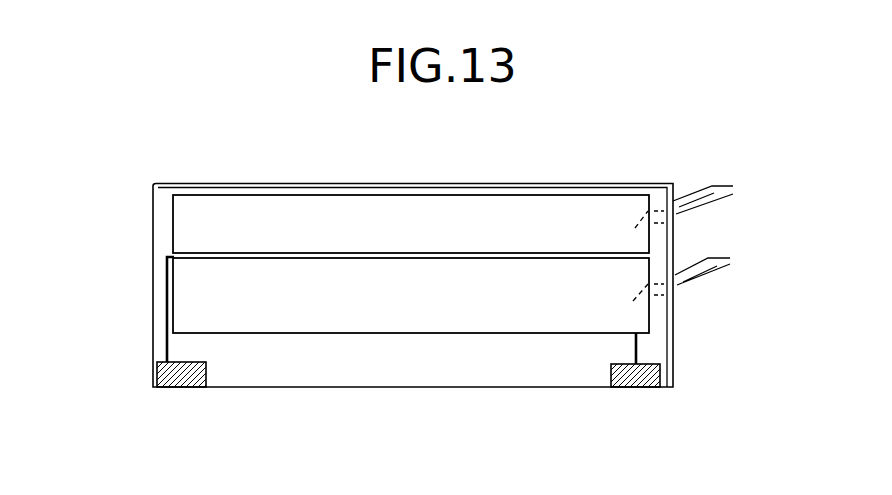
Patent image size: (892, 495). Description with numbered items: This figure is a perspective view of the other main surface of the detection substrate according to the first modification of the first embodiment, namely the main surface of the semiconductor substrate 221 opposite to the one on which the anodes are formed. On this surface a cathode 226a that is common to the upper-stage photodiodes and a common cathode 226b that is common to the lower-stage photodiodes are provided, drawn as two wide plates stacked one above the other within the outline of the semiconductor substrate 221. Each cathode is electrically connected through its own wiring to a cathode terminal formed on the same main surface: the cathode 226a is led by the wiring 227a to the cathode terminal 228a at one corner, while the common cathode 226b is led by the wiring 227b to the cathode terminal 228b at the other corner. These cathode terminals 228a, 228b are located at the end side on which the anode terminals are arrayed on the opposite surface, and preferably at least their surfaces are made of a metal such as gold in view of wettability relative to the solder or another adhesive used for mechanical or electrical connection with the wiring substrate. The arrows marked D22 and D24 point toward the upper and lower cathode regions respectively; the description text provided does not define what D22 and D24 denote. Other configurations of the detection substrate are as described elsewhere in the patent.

The semiconductor substrate 221 is at (675, 340).
The cathode 226a is at (410, 196).
The common cathode 226b is at (410, 334).
The wiring 227a is at (158, 345).
The wiring 227b is at (627, 347).
The cathode terminal 228a is at (193, 380).
The cathode terminal 228b is at (647, 382).
The displacement direction D22 is at (713, 198).
The displacement direction D24 is at (715, 268).